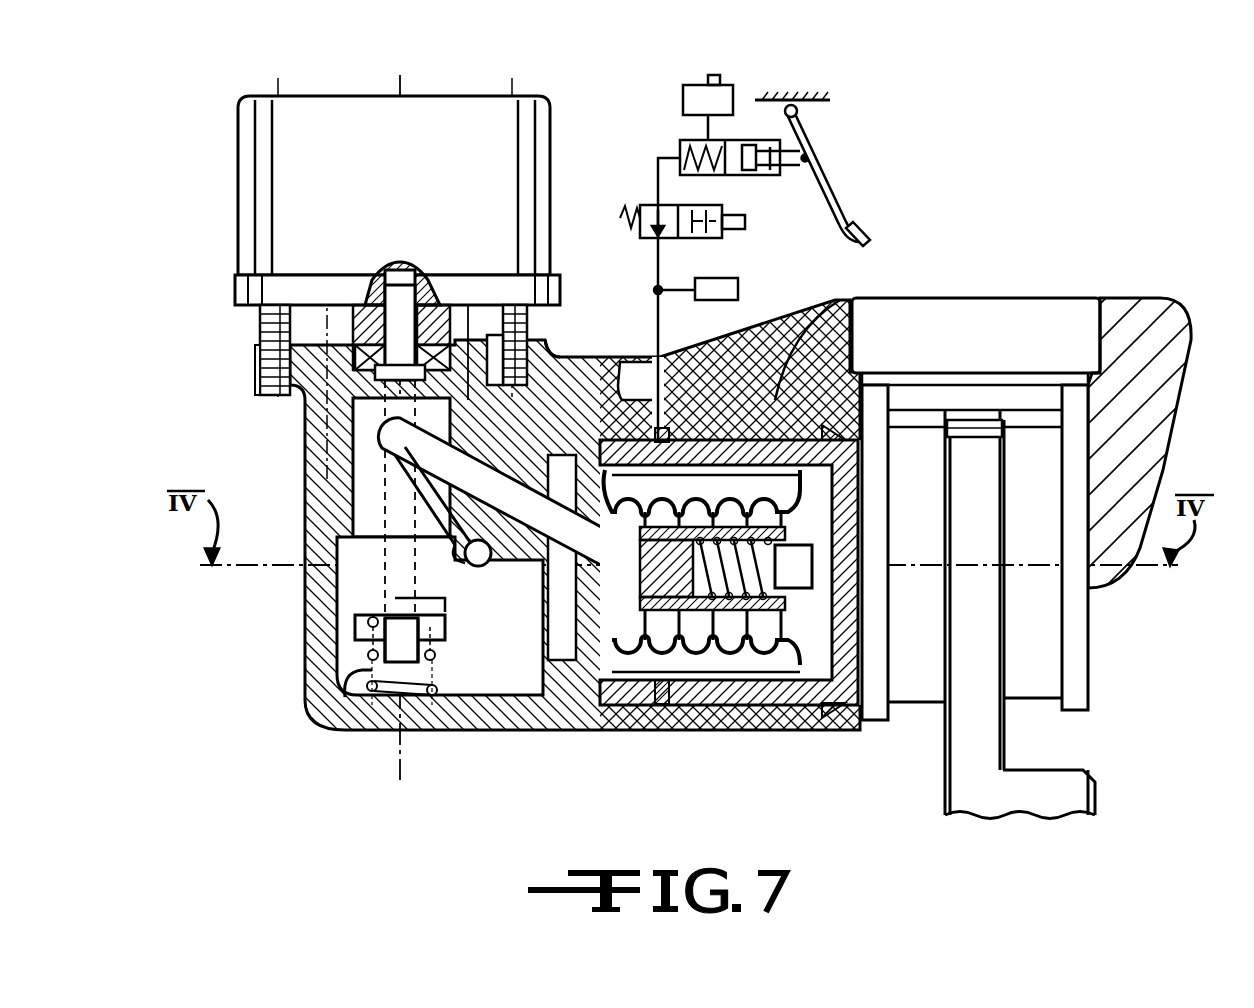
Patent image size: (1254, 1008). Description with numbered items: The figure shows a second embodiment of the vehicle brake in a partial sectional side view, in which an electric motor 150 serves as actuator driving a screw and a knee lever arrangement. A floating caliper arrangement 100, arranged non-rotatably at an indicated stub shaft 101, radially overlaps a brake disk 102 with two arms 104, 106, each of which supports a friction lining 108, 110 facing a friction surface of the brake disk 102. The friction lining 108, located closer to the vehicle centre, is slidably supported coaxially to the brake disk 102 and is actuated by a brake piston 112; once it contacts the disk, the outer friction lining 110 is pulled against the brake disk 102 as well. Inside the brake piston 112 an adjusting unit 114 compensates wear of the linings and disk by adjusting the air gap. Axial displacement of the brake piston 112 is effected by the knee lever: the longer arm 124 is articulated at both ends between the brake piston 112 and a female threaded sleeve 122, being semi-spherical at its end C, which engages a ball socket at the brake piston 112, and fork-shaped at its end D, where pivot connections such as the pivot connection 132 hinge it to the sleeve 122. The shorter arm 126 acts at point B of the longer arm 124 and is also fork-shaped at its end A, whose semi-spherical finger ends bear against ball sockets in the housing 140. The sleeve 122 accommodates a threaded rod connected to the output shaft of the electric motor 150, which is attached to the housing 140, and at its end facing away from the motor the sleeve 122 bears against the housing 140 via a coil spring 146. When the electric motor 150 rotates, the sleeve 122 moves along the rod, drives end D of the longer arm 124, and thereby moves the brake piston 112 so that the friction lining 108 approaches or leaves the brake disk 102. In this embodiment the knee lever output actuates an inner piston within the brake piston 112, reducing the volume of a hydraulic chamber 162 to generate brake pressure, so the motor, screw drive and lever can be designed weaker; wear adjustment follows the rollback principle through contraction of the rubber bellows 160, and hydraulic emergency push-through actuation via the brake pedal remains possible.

The floating caliper arrangement 100 is at (1038, 295).
The stub shaft 101 is at (1068, 778).
The brake disk 102 is at (965, 777).
The arm 104 is at (1127, 317).
The arm 106 is at (827, 335).
The friction lining 108 is at (913, 685).
The friction lining 110 is at (1032, 690).
The brake piston 112 is at (778, 695).
The adjusting unit 114 is at (640, 648).
The sleeve 122 is at (348, 500).
The arm 124 is at (548, 340).
The arm 126 is at (470, 555).
The pivot connection 132 is at (345, 445).
The housing 140 is at (318, 623).
The coil spring 146 is at (350, 690).
The electric motor 150 is at (472, 190).
The rubber bellows 160 is at (745, 660).
The hydraulic chamber 162 is at (773, 395).
The end A is at (335, 600).
The point B is at (547, 640).
The end C is at (592, 578).
The end D is at (355, 463).